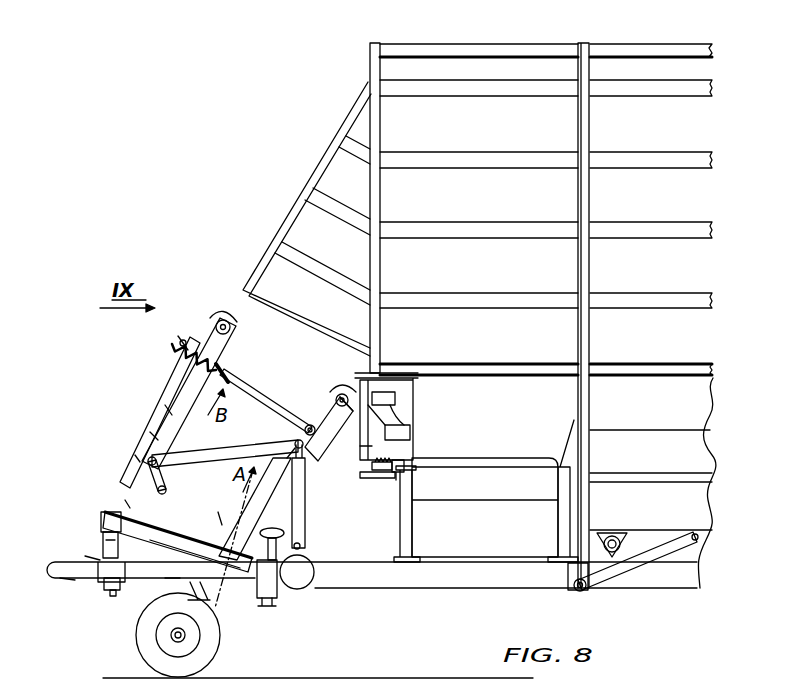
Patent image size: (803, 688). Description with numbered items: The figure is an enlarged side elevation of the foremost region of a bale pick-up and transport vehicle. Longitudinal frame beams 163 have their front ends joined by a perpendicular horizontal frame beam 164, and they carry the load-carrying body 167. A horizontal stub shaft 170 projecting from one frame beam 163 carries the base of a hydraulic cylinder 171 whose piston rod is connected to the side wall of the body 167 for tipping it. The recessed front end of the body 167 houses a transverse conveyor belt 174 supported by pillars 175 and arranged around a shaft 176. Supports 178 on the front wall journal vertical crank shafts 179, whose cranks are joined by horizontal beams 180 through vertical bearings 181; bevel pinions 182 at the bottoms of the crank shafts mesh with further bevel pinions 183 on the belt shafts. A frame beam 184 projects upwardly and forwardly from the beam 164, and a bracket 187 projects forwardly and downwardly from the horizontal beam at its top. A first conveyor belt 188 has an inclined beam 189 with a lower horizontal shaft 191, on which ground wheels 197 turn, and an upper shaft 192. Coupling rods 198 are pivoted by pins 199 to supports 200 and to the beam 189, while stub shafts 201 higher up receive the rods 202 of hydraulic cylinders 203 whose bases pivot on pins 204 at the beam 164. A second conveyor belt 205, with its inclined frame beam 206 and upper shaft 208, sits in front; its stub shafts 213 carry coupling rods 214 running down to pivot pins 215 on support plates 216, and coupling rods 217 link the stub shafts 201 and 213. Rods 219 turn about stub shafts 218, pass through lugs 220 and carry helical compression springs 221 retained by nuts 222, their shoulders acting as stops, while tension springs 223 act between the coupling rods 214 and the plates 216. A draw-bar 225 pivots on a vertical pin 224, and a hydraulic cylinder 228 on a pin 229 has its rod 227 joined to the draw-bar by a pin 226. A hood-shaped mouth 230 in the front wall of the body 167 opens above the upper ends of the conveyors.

The longitudinal frame beams 163 is at (484, 590).
The horizontal frame beam 164 is at (316, 572).
The body 167 is at (530, 45).
The horizontal stub shaft 170 is at (579, 592).
The hydraulic cylinder 171 is at (632, 567).
The conveyor belt 174 is at (515, 456).
The pillars 175 is at (415, 525).
The shaft 176 is at (358, 482).
The supports 178 is at (360, 450).
The crank shafts 179 is at (395, 413).
The horizontal beams 180 is at (398, 392).
The vertical bearings 181 is at (356, 428).
The bevel pinions 182 is at (372, 470).
The further bevel pinions 183 is at (395, 480).
The frame beam 184 is at (190, 543).
The bracket 187 is at (85, 556).
The conveyor belt 188 is at (240, 520).
The beam 189 is at (228, 598).
The horizontal shaft 191 is at (170, 635).
The horizontal shaft 192 is at (349, 375).
The ground wheels 197 is at (140, 651).
The coupling rods 198 is at (215, 525).
The pivot pins 199 is at (112, 517).
The supports 200 is at (105, 535).
The stub shafts 201 is at (305, 431).
The rods 202 is at (258, 476).
The hydraulic cylinders 203 is at (306, 503).
The pivot pins 204 is at (305, 543).
The second conveyor belt 205 is at (168, 410).
The frame beam 206 is at (158, 432).
The upper horizontal shaft 208 is at (225, 318).
The horizontal stub shafts 213 is at (146, 447).
The coupling rods 214 is at (135, 455).
The pivot pins 215 is at (125, 500).
The support plates 216 is at (146, 530).
The coupling rods 217 is at (224, 452).
The stub shafts 218 is at (315, 420).
The rods 219 is at (247, 387).
The lugs 220 is at (232, 363).
The helical compression springs 221 is at (178, 358).
The nuts 222 is at (183, 338).
The tension springs 223 is at (166, 466).
The vertical pin 224 is at (276, 606).
The draw-bar 225 is at (72, 580).
The vertical pin 226 is at (108, 590).
The rod 227 is at (122, 590).
The hydraulic cylinder 228 is at (175, 579).
The vertical pin 229 is at (285, 598).
The hood-shaped mouth 230 is at (344, 124).